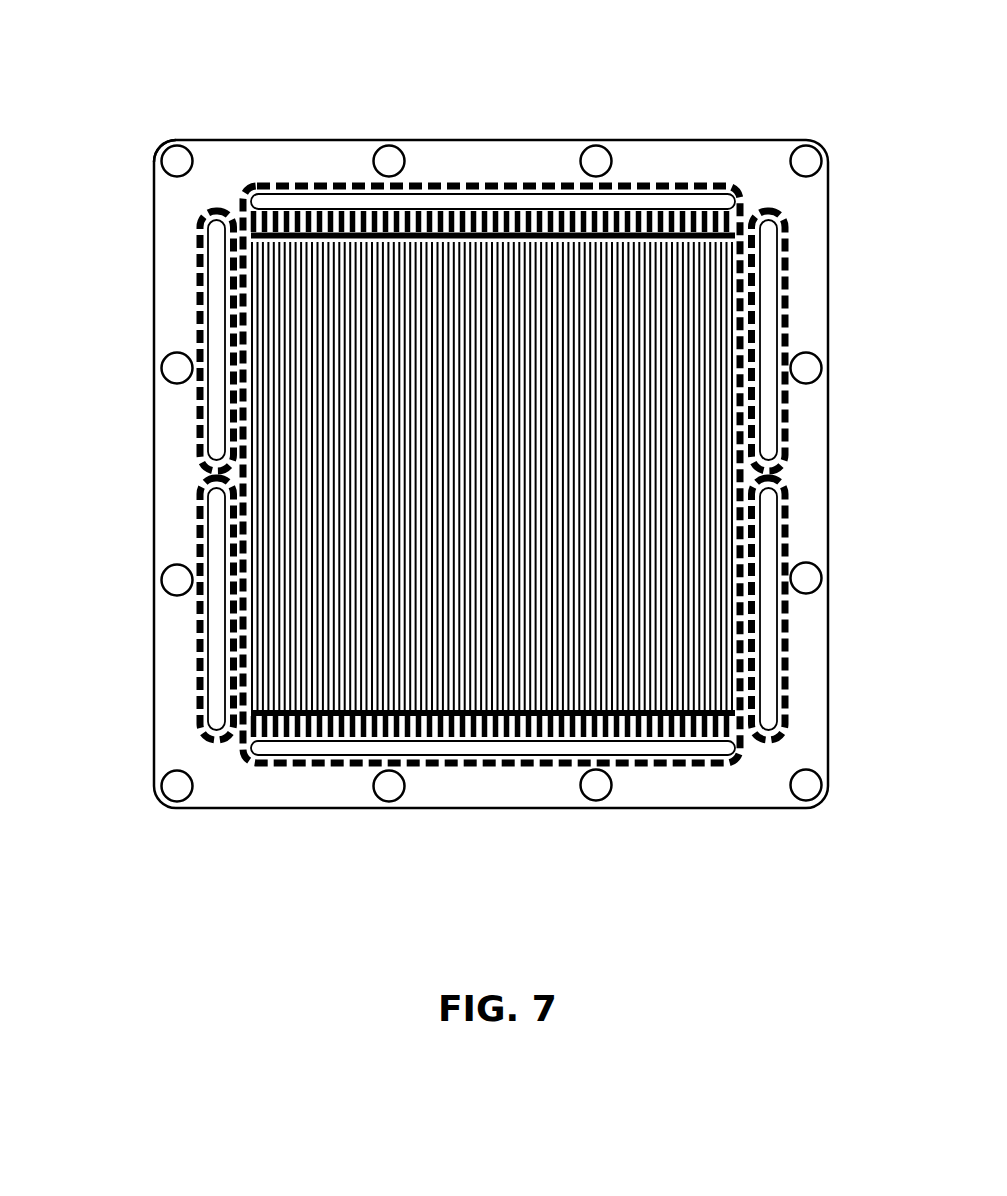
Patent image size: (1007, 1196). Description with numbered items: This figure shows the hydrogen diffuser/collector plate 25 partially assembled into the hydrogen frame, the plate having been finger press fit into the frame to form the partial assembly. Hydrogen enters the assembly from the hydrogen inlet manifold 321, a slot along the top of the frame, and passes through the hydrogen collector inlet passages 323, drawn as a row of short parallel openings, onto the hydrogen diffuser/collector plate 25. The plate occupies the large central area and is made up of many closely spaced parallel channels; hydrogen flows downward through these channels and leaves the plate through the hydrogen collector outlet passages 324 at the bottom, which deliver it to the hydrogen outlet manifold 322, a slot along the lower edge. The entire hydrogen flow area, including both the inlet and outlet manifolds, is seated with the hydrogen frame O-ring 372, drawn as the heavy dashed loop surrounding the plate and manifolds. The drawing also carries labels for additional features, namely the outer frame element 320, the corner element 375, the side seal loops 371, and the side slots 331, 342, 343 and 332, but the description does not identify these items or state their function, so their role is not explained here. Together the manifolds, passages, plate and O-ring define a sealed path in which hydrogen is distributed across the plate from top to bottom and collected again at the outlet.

The separator plate 320 is at (452, 131).
The plate corner / flange 375 is at (187, 136).
The hydrogen frame O-ring 372 is at (512, 173).
The hydrogen inlet manifold 321 is at (645, 190).
The hydrogen outlet manifold 322 is at (396, 745).
The hydrogen collector inlet passages 323 is at (291, 202).
The hydrogen collector outlet passages 324 is at (622, 734).
The hydrogen diffuser/collector plate 25 is at (464, 652).
The slot gasket seal 371 is at (782, 246).
The left upper side slot 331 is at (206, 340).
The left lower side slot 342 is at (205, 658).
The right upper side slot 343 is at (764, 320).
The right lower side slot 332 is at (767, 630).